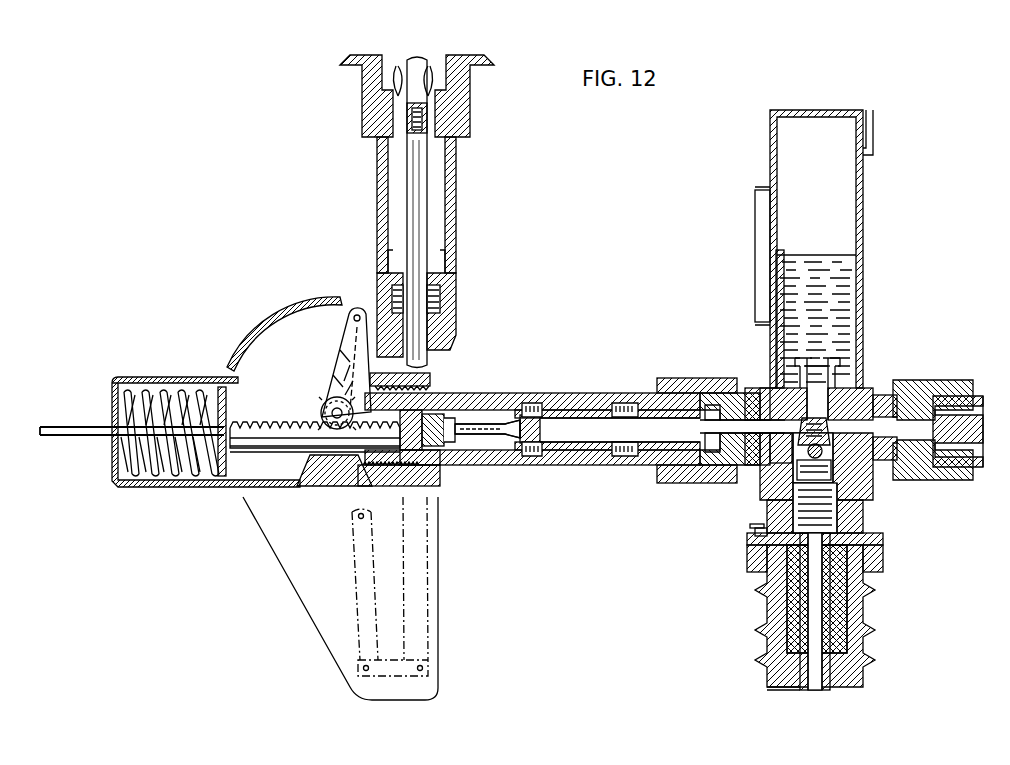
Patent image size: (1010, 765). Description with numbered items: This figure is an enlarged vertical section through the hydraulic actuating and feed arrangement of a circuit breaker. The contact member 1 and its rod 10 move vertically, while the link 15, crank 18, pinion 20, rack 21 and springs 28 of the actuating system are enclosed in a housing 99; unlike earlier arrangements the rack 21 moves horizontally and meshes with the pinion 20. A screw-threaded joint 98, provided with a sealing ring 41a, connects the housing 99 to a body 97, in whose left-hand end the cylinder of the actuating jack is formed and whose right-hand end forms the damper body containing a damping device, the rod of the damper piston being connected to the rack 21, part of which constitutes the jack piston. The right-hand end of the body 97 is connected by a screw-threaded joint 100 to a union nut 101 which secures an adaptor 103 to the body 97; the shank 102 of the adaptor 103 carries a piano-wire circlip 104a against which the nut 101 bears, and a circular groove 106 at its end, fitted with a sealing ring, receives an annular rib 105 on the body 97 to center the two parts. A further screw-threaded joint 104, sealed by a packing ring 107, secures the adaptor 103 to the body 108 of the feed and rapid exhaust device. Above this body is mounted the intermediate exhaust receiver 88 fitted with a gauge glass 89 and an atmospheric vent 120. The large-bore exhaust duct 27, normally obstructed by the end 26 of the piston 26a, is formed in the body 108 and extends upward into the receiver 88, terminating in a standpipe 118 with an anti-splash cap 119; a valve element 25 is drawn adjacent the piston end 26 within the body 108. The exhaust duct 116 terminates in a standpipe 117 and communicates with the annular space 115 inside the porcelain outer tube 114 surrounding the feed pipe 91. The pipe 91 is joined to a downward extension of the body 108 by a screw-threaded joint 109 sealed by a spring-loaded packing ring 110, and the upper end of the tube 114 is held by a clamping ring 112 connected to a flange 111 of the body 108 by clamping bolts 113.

The contact member 1 is at (406, 60).
The rod 10 is at (425, 200).
The link 15 is at (356, 567).
The crank 18 is at (350, 360).
The pinion 20 is at (324, 416).
The rack 21 is at (279, 426).
The valve ball 25 is at (826, 452).
The end of piston 26 is at (832, 422).
The piston 26a is at (838, 466).
The large-bore exhaust duct 27 is at (820, 382).
The springs 28 is at (122, 394).
The sealing ring 41a is at (422, 392).
The intermediate exhaust receiver 88 is at (862, 212).
The gauge glass 89 is at (758, 192).
The feed pipe 91 is at (835, 674).
The body 97 is at (548, 397).
The screw-threaded joint 98 is at (379, 486).
The housing 99 is at (188, 485).
The screw-threaded joint 100 is at (672, 470).
The union nut 101 is at (674, 392).
The shank 102 is at (718, 404).
The adaptor 103 is at (762, 398).
The screw-threaded joint 104 is at (770, 470).
The piano-wire circlip 104a is at (737, 396).
The annular rib 105 is at (716, 462).
The circular groove 106 is at (698, 422).
The packing ring 107 is at (762, 452).
The body 108 is at (848, 512).
The screw-threaded joint 109 is at (835, 612).
The spring-loaded packing ring 110 is at (878, 538).
The flange 111 is at (878, 548).
The clamping ring 112 is at (758, 560).
The clamping bolts 113 is at (760, 541).
The porcelain outer tube 114 is at (767, 606).
The annular space 115 is at (792, 671).
The exhaust duct 116 is at (754, 529).
The standpipe 117 is at (779, 393).
The standpipe 118 is at (858, 392).
The anti-splash cap 119 is at (810, 362).
The atmospheric vent 120 is at (878, 120).